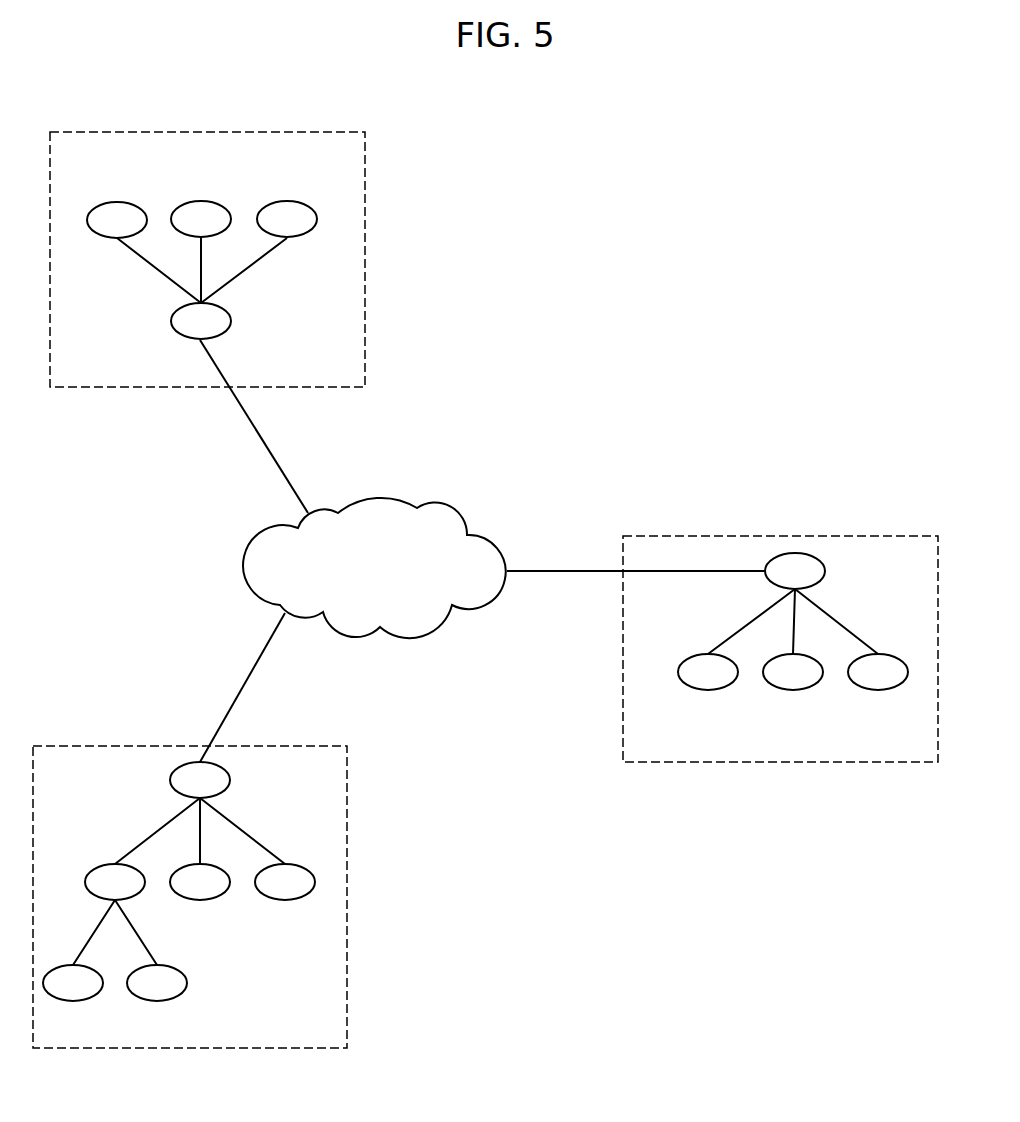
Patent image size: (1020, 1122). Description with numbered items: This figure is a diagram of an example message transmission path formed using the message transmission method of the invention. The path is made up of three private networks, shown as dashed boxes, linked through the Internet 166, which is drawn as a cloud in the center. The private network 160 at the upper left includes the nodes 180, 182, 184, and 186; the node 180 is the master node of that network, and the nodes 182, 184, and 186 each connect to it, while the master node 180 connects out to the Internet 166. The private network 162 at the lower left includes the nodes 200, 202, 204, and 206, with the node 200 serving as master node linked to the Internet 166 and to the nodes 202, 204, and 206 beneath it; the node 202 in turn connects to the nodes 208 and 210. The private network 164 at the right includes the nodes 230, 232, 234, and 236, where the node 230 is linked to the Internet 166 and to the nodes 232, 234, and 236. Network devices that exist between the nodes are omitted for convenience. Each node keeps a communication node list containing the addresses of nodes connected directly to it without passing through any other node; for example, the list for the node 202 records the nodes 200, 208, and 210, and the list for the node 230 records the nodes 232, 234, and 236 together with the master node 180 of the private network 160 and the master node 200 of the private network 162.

The private network 160 is at (366, 232).
The private network 162 is at (67, 745).
The private network 164 is at (662, 535).
The Internet 166 is at (487, 542).
The master node 180 is at (233, 321).
The node 182 is at (117, 200).
The node 184 is at (202, 200).
The node 186 is at (295, 200).
The master node 200 is at (233, 780).
The node 202 is at (98, 865).
The node 204 is at (200, 900).
The node 206 is at (285, 900).
The node 208 is at (73, 1001).
The node 210 is at (157, 1001).
The node 230 is at (827, 571).
The node 232 is at (708, 690).
The node 234 is at (793, 690).
The node 236 is at (878, 690).